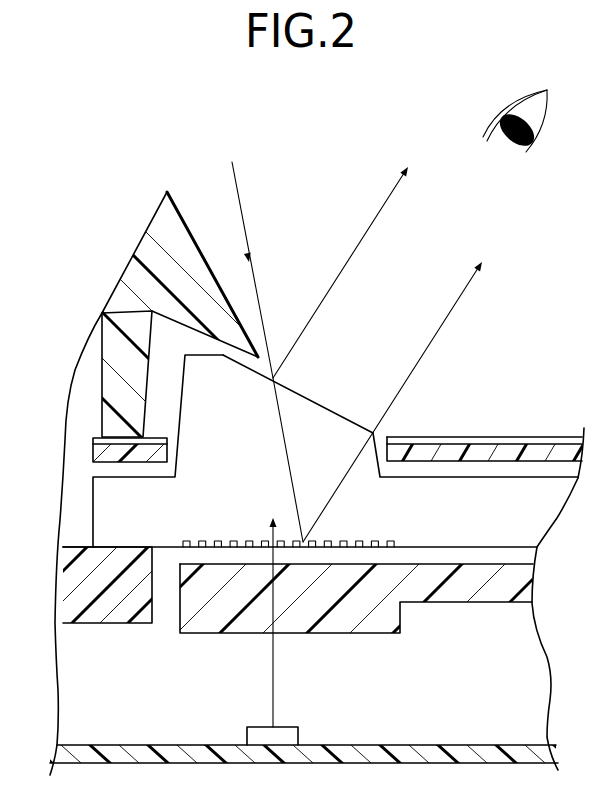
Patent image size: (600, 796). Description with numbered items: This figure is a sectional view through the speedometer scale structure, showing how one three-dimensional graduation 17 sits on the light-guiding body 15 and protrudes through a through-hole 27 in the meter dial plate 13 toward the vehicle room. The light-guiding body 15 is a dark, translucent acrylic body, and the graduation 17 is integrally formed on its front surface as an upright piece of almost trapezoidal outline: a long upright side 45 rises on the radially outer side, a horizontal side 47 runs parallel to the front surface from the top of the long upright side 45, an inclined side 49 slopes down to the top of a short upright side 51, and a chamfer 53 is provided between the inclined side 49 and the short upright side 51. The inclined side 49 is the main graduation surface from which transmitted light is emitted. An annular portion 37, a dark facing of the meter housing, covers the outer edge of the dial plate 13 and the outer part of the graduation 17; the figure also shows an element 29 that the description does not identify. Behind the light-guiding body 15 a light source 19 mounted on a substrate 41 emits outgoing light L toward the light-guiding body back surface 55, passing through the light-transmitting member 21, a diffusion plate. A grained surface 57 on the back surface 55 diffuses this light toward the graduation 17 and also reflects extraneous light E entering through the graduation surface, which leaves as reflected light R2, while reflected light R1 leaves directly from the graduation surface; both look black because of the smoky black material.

The meter dial plate 13 is at (551, 440).
The light-guiding body 15 is at (85, 492).
The three-dimensional graduation 17 is at (172, 361).
The light source 19 is at (296, 721).
The light-transmitting member 21 is at (170, 617).
The through-hole 27 is at (170, 451).
The cover plate 29 is at (503, 437).
The annular portion 37 is at (183, 223).
The substrate 41 is at (90, 747).
The long upright side 45 is at (102, 398).
The horizontal side 47 is at (101, 312).
The inclined side 49 is at (302, 391).
The short upright side 51 is at (380, 453).
The chamfer 53 is at (373, 432).
The light-guiding body back surface 55 is at (430, 548).
The grained surface 57 is at (253, 548).
The extraneous light E is at (240, 207).
The outgoing light L is at (276, 674).
The reflected light R1 is at (382, 212).
The reflected light R2 is at (458, 302).